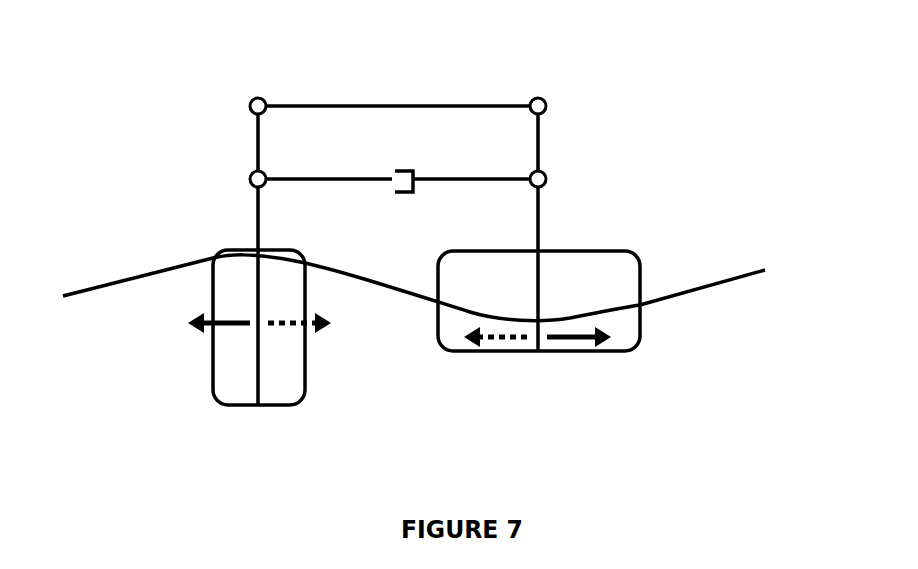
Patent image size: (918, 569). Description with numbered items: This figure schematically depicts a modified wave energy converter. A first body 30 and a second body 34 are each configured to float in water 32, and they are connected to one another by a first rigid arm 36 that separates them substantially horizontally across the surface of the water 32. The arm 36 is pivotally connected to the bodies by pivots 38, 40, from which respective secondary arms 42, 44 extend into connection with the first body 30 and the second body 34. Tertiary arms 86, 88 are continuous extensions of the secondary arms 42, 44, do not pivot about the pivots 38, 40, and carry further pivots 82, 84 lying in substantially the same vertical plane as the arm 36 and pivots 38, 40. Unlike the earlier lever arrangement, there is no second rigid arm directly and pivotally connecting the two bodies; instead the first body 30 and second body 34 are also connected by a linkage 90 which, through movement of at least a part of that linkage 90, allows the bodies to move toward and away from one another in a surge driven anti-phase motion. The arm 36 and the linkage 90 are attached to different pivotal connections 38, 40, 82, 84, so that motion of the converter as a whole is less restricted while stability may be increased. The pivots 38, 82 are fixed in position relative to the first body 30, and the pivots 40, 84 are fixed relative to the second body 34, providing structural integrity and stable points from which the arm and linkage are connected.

The first body 30 is at (222, 388).
The water 32 is at (718, 305).
The second body 34 is at (445, 343).
The arm 36 is at (403, 98).
The pivot 38 is at (253, 170).
The pivot 40 is at (550, 174).
The secondary arm 42 is at (255, 234).
The secondary arm 44 is at (545, 227).
The pivot 82 is at (268, 98).
The pivot 84 is at (540, 97).
The tertiary arm 86 is at (265, 134).
The tertiary arm 88 is at (533, 152).
The linkage 90 is at (402, 199).